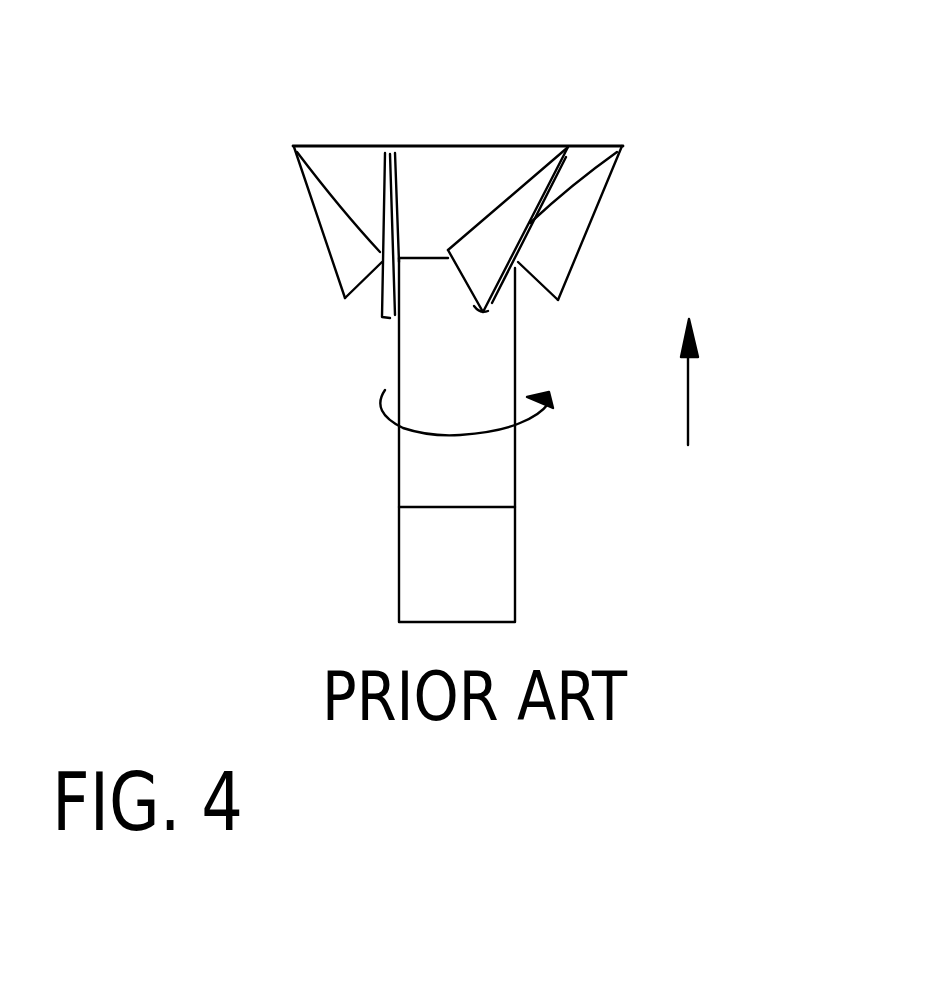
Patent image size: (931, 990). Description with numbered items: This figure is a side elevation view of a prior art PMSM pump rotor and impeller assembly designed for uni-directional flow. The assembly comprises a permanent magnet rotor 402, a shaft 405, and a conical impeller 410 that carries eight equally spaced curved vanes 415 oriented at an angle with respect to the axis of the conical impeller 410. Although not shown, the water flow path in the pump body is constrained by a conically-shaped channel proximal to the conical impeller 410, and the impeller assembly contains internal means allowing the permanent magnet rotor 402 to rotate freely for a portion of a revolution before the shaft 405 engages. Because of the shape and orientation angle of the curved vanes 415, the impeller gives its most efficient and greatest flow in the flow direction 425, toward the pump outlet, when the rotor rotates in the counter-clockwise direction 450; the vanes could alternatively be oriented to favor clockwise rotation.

The permanent magnet rotor 402 is at (437, 577).
The shaft 405 is at (432, 370).
The conical impeller 410 is at (470, 182).
The curved vanes 415 is at (380, 183).
The flow direction 425 is at (700, 383).
The counter-clockwise direction 450 is at (540, 428).